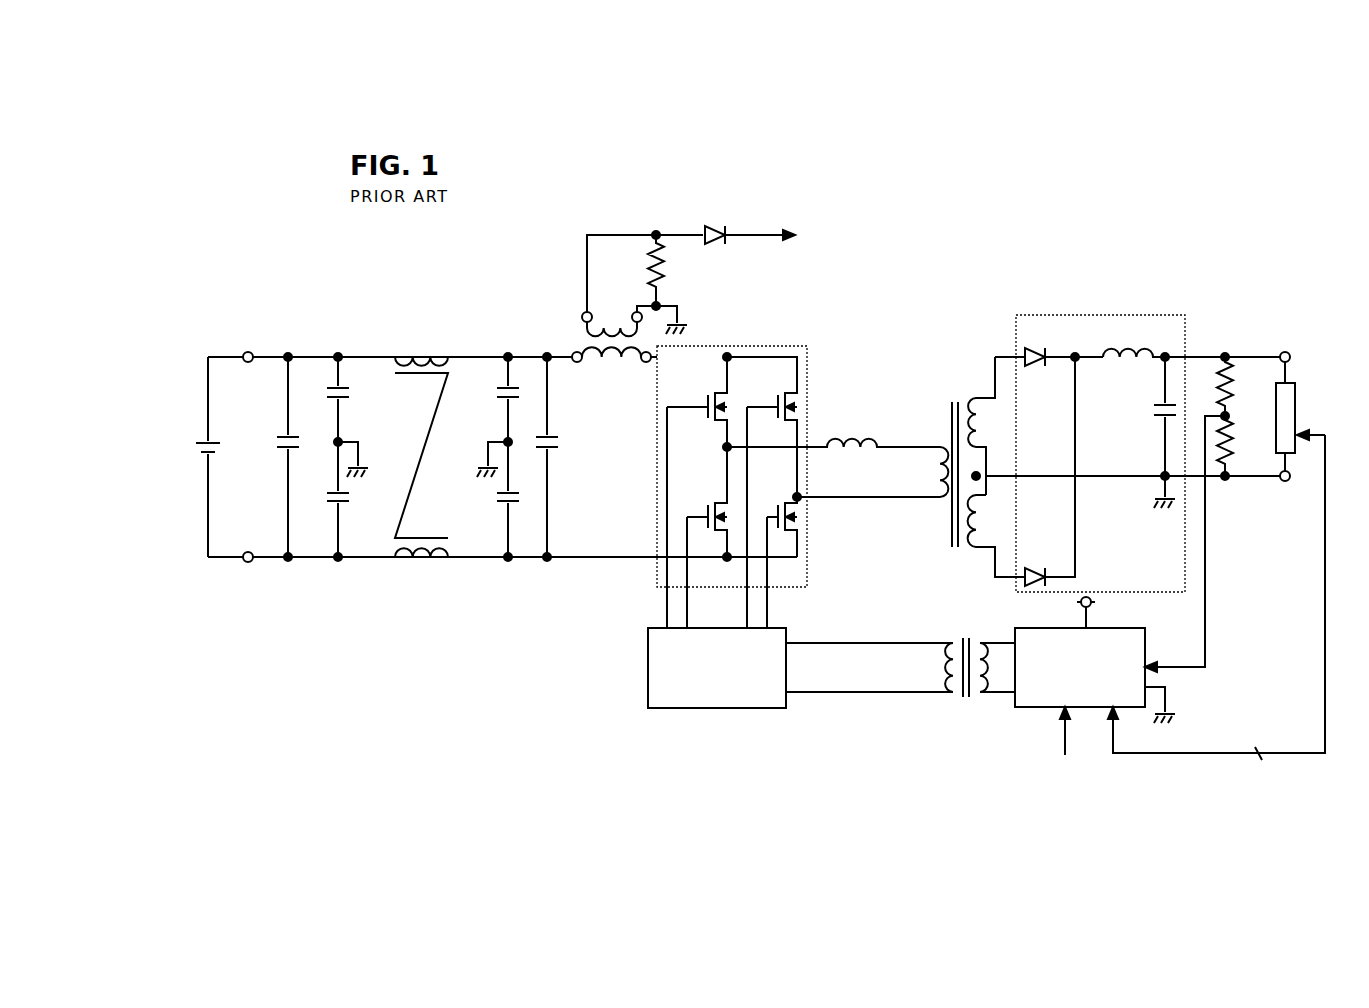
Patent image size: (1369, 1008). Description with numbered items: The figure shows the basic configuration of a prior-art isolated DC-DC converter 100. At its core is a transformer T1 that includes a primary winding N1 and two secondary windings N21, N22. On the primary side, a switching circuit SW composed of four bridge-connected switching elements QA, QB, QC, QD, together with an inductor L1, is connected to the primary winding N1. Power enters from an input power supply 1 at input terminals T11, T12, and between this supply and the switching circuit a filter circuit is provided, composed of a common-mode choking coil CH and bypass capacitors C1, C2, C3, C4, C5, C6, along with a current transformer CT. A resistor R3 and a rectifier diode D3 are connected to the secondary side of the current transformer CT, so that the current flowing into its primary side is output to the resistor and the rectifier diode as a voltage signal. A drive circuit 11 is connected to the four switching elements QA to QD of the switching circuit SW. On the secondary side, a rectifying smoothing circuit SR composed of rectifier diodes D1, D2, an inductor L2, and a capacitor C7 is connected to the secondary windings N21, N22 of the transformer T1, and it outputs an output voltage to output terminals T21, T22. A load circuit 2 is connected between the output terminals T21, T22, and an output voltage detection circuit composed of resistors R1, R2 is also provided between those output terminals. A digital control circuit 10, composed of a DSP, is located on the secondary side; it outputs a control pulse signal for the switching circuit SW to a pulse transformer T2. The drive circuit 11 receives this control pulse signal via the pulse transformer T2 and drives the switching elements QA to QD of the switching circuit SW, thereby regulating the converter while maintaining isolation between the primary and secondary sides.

The input power supply 1 is at (190, 451).
The load circuit 2 is at (1300, 418).
The digital control circuit 10 is at (1145, 628).
The drive circuit 11 is at (787, 627).
The switching power supply 100 is at (1118, 210).
The input terminal T11 is at (252, 348).
The input terminal T12 is at (249, 565).
The output terminal T21 is at (1289, 351).
The output terminal T22 is at (1282, 485).
The bypass capacitor C1 is at (273, 457).
The bypass capacitor C2 is at (353, 417).
The bypass capacitor C3 is at (353, 499).
The bypass capacitor C4 is at (494, 417).
The bypass capacitor C5 is at (497, 499).
The bypass capacitor C6 is at (560, 457).
The capacitor C7 is at (1152, 432).
The common-mode choking coil CH is at (432, 332).
The current transformer CT is at (583, 343).
The resistor R1 is at (1240, 386).
The resistor R2 is at (1240, 446).
The resistor R3 is at (642, 270).
The rectifier diode D1 is at (1063, 345).
The rectifier diode D2 is at (1050, 471).
The rectifier diode D3 is at (749, 220).
The switching circuit SW is at (807, 346).
The switching element QA is at (697, 402).
The switching element QB is at (703, 502).
The switching element QC is at (762, 427).
The switching element QD is at (775, 516).
The inductor L1 is at (833, 455).
The inductor L2 is at (1191, 340).
The transformer T1 is at (965, 464).
The pulse transformer T2 is at (967, 711).
The primary winding N1 is at (927, 472).
The secondary winding N21 is at (991, 426).
The secondary winding N22 is at (996, 536).
The rectifier smoothing circuit SR is at (1185, 315).